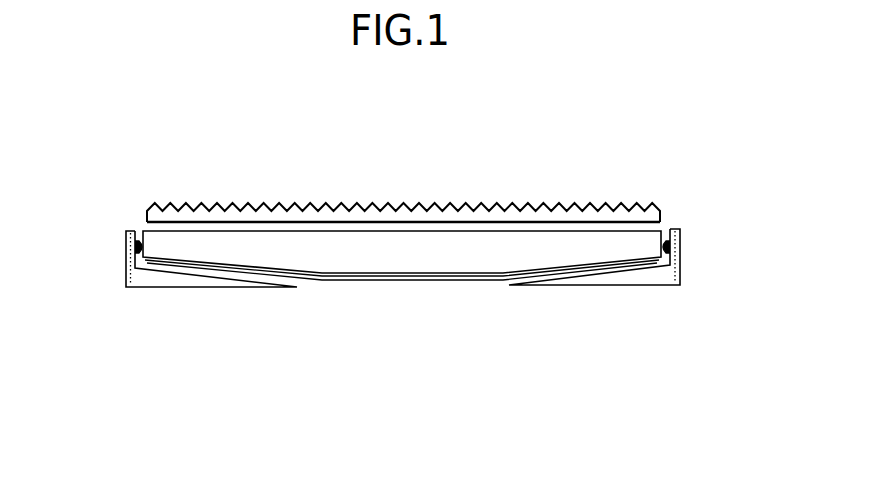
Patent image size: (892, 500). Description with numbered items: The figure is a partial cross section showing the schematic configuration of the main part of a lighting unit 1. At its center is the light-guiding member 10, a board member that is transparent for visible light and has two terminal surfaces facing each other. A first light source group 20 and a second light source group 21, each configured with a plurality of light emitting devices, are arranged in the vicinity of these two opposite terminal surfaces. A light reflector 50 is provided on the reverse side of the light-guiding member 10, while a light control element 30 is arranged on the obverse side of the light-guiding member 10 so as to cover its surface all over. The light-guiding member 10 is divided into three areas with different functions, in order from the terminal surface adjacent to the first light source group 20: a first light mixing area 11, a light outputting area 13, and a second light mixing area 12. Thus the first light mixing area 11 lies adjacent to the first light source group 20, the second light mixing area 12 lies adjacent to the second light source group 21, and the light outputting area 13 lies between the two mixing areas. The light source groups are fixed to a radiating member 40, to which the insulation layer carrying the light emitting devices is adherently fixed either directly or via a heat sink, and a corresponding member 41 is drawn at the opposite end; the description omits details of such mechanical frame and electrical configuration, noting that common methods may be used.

The lighting unit 1 is at (470, 168).
The light-guiding member 10 is at (328, 259).
The first light mixing area 11 is at (303, 290).
The second light mixing area 12 is at (655, 290).
The light outputting area 13 is at (317, 288).
The first light source group 20 is at (140, 242).
The second light source group 21 is at (663, 242).
The light control element 30 is at (333, 207).
The radiating member 40 is at (126, 287).
The second frame 41 is at (680, 285).
The light reflector 50 is at (493, 283).